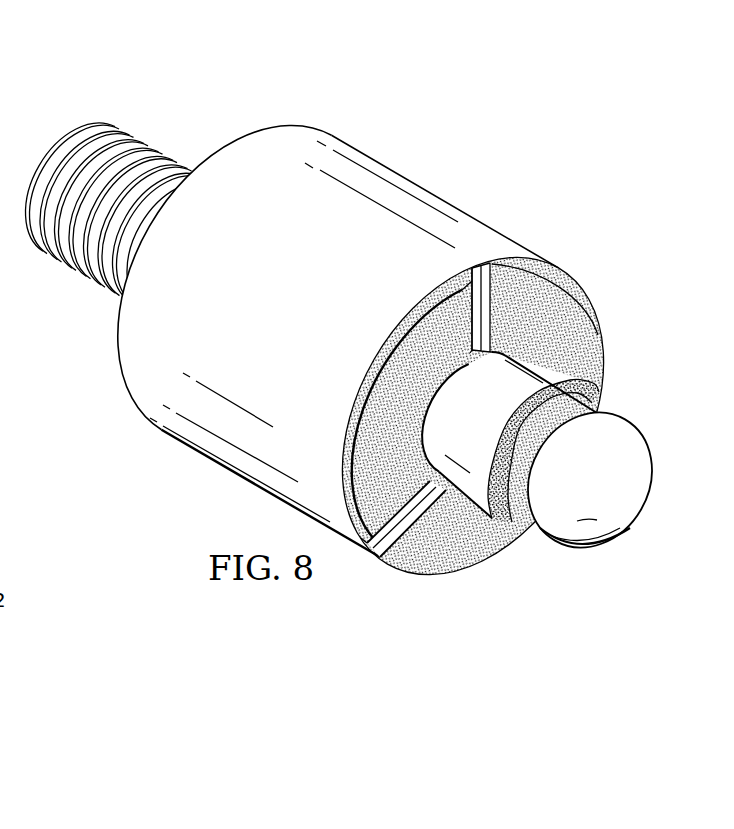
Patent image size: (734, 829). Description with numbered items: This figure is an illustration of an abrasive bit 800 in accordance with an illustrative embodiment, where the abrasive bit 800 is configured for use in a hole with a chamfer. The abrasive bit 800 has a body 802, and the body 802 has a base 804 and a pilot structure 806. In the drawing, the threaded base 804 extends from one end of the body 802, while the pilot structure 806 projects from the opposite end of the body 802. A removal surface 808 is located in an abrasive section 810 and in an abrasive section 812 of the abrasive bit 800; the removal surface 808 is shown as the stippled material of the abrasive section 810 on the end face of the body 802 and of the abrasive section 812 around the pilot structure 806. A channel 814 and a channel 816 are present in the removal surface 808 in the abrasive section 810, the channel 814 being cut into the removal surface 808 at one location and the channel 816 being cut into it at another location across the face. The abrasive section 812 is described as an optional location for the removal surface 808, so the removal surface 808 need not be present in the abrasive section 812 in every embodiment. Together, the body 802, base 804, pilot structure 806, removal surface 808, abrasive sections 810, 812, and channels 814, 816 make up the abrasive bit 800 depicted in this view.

The abrasive bit 800 is at (365, 336).
The body 802 is at (430, 200).
The base 804 is at (119, 132).
The pilot structure 806 is at (638, 498).
The removal surface 808 is at (578, 300).
The abrasive section 810 is at (596, 350).
The abrasive section 812 is at (599, 382).
The channel 814 is at (463, 268).
The channel 816 is at (404, 555).